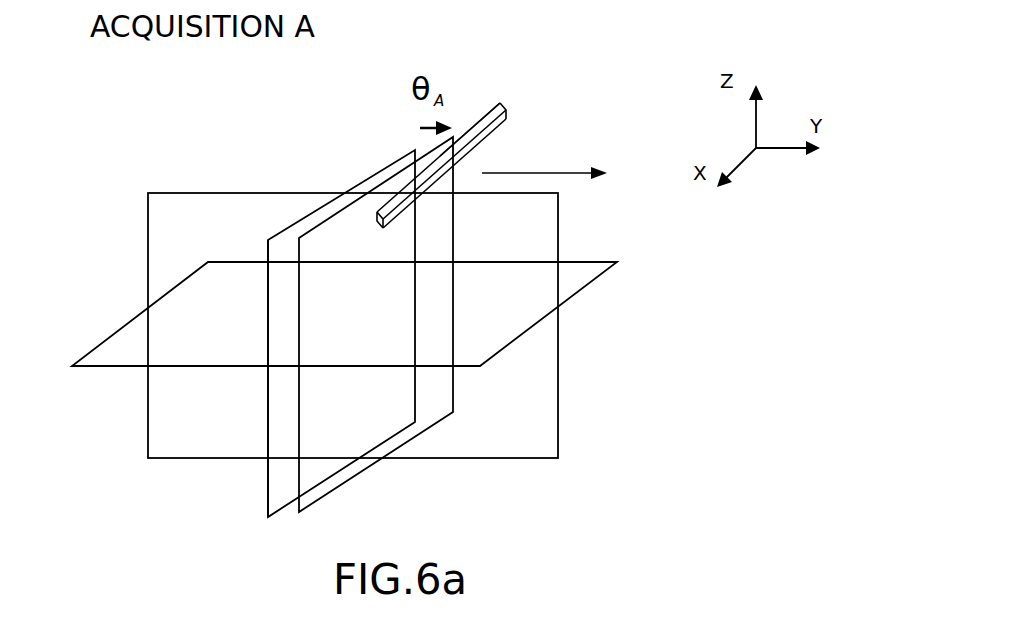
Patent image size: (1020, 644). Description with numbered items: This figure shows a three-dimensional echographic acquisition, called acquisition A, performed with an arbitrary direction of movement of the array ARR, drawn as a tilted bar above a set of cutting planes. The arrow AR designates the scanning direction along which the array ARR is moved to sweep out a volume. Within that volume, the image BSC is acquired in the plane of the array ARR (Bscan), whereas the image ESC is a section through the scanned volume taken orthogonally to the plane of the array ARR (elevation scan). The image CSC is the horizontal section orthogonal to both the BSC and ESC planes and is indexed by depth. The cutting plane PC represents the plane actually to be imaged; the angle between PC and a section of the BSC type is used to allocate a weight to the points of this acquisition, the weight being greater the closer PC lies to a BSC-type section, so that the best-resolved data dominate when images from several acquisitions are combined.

The elevation scan image ESC is at (277, 204).
The cutting plane PC is at (260, 501).
The Bscan image BSC is at (330, 503).
The C-scan image CSC is at (580, 285).
The scanning direction arrow AR is at (453, 165).
The array ARR is at (483, 115).